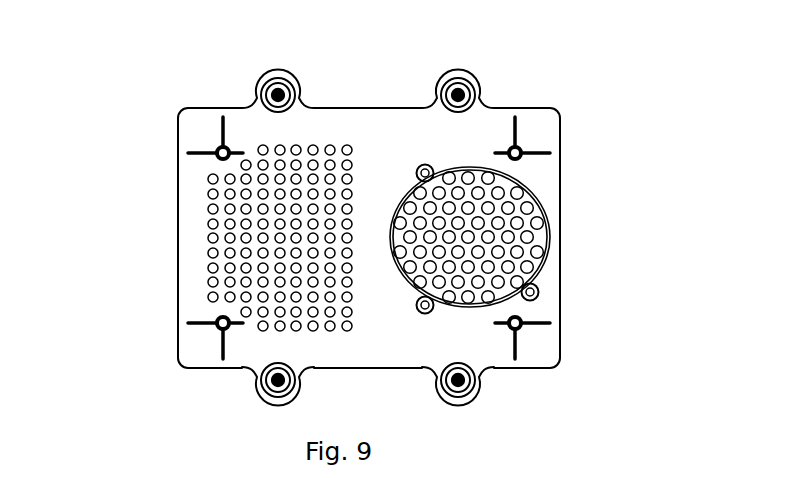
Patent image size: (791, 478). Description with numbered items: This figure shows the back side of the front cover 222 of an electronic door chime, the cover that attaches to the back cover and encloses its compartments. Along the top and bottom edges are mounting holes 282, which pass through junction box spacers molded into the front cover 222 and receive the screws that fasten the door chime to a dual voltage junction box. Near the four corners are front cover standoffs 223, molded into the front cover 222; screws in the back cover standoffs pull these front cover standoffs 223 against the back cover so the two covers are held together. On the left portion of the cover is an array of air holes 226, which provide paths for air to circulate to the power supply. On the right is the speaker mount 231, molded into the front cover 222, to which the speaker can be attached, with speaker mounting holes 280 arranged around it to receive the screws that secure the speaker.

The front cover 222 is at (190, 127).
The mounting holes 282 is at (447, 92).
The front cover standoffs 223 is at (520, 149).
The air holes 226 is at (245, 240).
The speaker mount 231 is at (543, 197).
The speaker mounting holes 280 is at (539, 294).